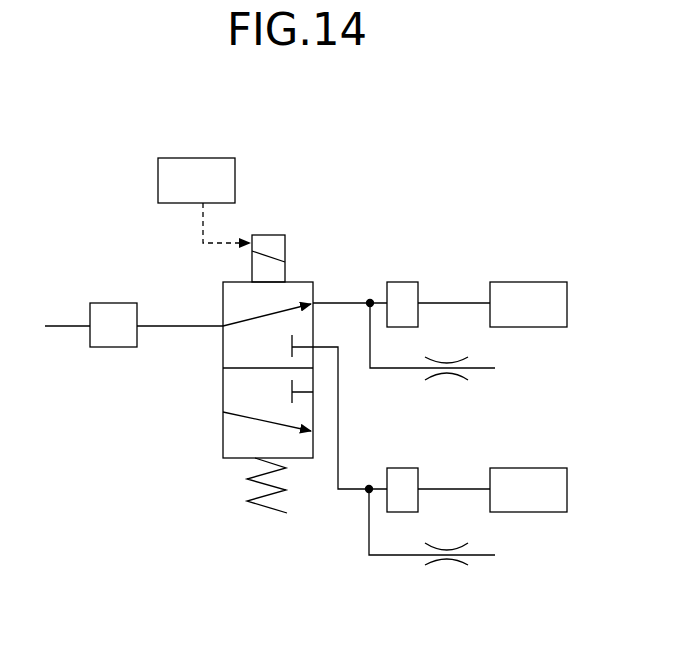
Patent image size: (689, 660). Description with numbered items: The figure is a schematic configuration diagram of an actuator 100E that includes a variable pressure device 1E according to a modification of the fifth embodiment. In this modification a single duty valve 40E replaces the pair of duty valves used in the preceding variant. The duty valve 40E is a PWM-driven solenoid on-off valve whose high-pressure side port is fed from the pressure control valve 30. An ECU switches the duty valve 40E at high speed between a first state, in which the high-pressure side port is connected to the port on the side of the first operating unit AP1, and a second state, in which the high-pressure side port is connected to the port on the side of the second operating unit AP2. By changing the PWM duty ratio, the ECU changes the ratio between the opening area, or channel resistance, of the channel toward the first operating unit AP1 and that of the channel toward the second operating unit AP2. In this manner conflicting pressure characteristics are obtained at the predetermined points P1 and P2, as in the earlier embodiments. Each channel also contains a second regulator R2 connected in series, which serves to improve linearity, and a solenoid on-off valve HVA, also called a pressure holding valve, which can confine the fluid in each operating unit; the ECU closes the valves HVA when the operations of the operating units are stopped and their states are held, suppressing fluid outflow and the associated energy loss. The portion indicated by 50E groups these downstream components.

The variable pressure device 1E is at (122, 169).
The actuator 100E is at (471, 145).
The pressure control valve 30 is at (115, 303).
The duty valve 40E is at (299, 279).
The hydraulic pressure adjusting unit 50E is at (379, 257).
The element ECU is at (204, 200).
The solenoid on-off valve HVA is at (404, 282).
The predetermined point P1 is at (367, 300).
The predetermined point P2 is at (365, 494).
The second regulator R2 is at (468, 380).
The first operating unit AP1 is at (492, 304).
The second operating unit AP2 is at (492, 490).